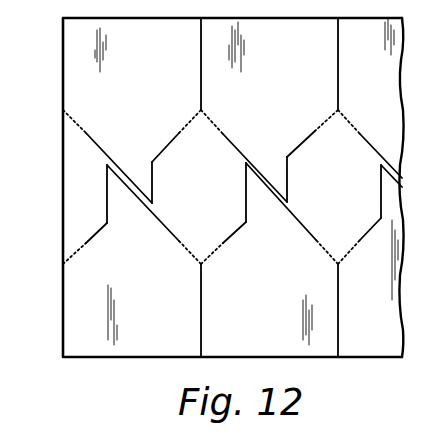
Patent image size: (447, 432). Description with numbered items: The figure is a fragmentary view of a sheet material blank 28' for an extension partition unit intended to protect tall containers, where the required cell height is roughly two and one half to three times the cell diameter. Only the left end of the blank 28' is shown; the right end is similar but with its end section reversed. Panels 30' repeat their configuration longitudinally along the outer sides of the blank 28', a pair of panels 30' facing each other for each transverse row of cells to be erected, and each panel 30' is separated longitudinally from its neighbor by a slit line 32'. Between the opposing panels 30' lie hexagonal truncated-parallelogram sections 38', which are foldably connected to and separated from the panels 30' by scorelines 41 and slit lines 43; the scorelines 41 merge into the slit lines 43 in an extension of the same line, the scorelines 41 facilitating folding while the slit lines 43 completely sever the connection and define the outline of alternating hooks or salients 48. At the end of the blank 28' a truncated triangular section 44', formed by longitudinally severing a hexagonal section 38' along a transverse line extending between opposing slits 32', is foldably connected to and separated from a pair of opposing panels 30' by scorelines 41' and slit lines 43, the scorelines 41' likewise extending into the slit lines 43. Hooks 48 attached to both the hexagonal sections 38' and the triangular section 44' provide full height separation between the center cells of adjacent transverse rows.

The blank 28' is at (212, 187).
The panel 30' is at (246, 181).
The slit line 32' is at (271, 187).
The hexagonal truncated-parallelogram section 38' is at (273, 159).
The scoreline 41 is at (275, 193).
The scoreline 41' is at (89, 197).
The slit line 43 is at (103, 146).
The truncated triangular section 44' is at (85, 193).
The hook or salient 48 is at (134, 168).